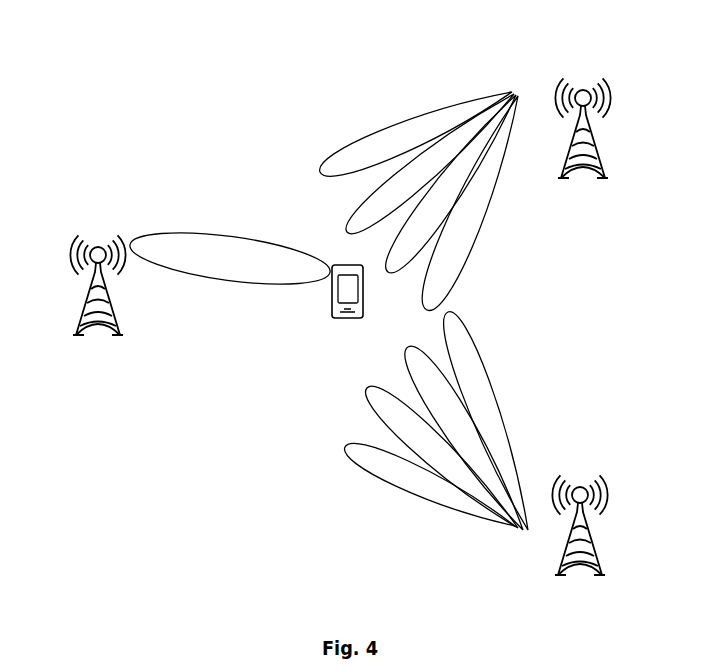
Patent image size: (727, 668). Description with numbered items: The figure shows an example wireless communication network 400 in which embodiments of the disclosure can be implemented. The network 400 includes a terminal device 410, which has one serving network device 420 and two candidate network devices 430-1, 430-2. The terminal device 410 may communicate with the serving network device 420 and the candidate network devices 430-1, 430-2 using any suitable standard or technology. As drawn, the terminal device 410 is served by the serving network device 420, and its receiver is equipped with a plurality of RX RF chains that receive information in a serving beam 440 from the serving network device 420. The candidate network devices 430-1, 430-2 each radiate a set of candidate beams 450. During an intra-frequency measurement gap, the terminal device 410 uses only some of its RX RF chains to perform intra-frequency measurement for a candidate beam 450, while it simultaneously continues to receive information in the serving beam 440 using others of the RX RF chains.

The wireless communication network 400 is at (247, 34).
The terminal device 410 is at (340, 317).
The serving network device 420 is at (77, 315).
The candidate network device 430-1 is at (647, 173).
The candidate network device 430-2 is at (600, 560).
The serving beam 440 is at (235, 287).
The candidate beam 450 is at (502, 415).